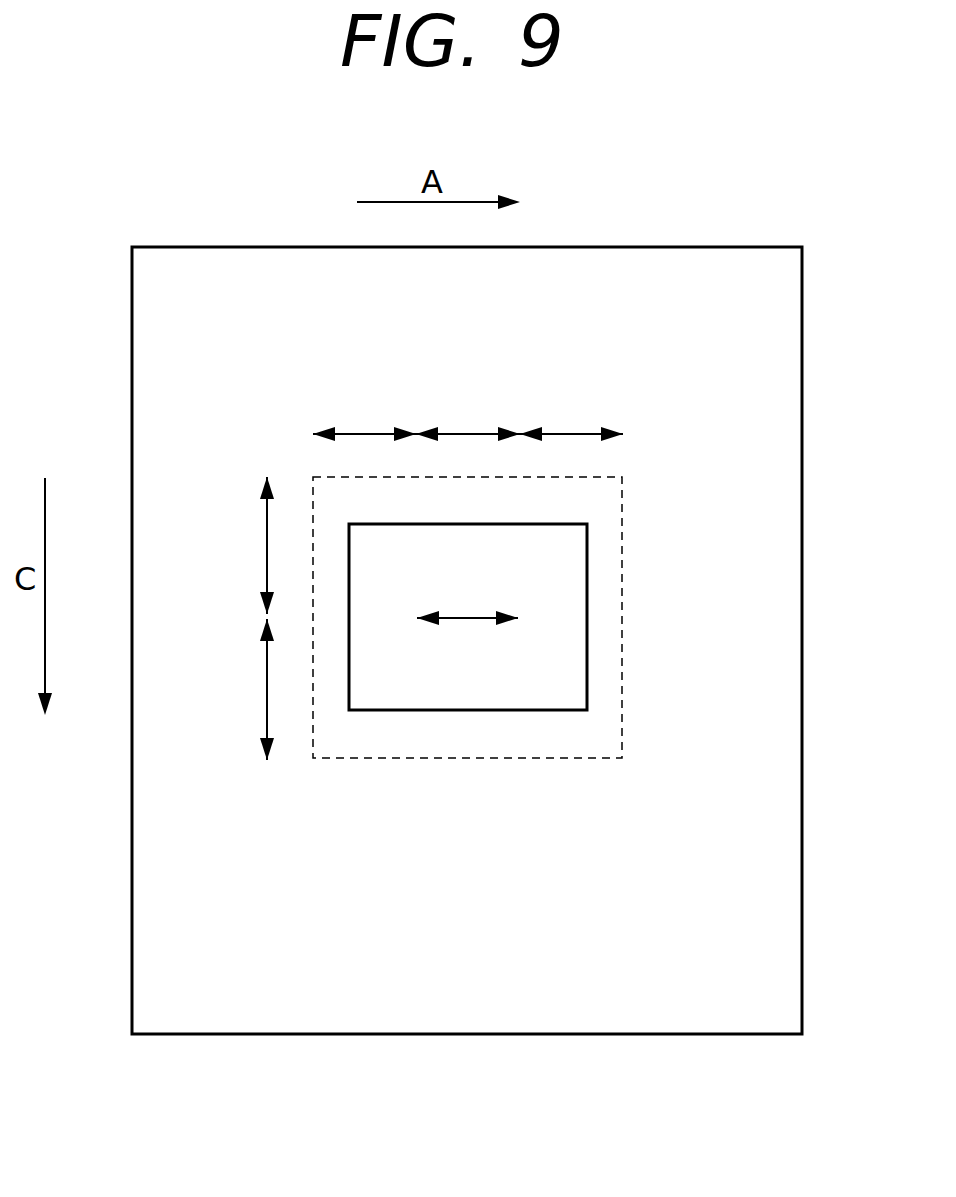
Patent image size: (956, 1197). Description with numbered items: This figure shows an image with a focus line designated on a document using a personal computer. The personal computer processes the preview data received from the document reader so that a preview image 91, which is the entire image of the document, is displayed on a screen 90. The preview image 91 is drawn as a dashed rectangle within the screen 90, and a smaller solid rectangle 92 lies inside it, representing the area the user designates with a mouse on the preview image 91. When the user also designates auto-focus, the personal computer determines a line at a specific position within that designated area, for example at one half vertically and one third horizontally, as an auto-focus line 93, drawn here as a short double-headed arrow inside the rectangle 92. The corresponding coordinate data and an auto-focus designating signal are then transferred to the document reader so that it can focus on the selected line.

The screen 90 is at (748, 247).
The preview image 91 is at (622, 716).
The pattern region 92 is at (587, 642).
The auto-focus line 93 is at (470, 617).